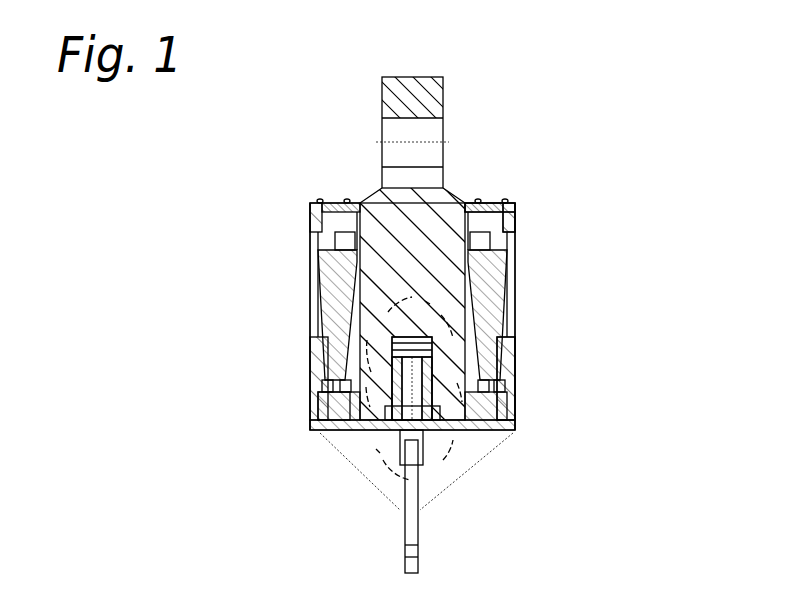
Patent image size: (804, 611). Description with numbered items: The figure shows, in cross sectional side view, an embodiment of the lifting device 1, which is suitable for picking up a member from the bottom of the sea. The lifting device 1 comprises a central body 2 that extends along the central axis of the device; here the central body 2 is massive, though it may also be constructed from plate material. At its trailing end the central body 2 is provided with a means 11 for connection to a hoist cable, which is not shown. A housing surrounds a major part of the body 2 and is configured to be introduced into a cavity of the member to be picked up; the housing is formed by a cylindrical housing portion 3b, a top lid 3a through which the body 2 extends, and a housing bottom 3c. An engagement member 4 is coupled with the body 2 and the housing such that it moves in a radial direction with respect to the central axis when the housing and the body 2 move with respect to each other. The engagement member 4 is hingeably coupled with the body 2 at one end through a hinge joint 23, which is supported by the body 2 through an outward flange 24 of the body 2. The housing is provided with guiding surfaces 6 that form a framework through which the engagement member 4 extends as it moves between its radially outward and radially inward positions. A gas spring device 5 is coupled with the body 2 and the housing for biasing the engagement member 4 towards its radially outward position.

The lifting device 1 is at (567, 70).
The means for connection to a hoist cable 11 is at (447, 98).
The central body 2 is at (430, 233).
The top lid 3a is at (512, 200).
The cylindrical housing portion 3b is at (513, 228).
The housing bottom 3c is at (478, 428).
The engagement member 4 is at (335, 278).
The gas spring device 5 is at (381, 463).
The guiding surfaces 6 is at (512, 298).
The hinge joint 23 is at (323, 397).
The outward flange 24 is at (330, 412).